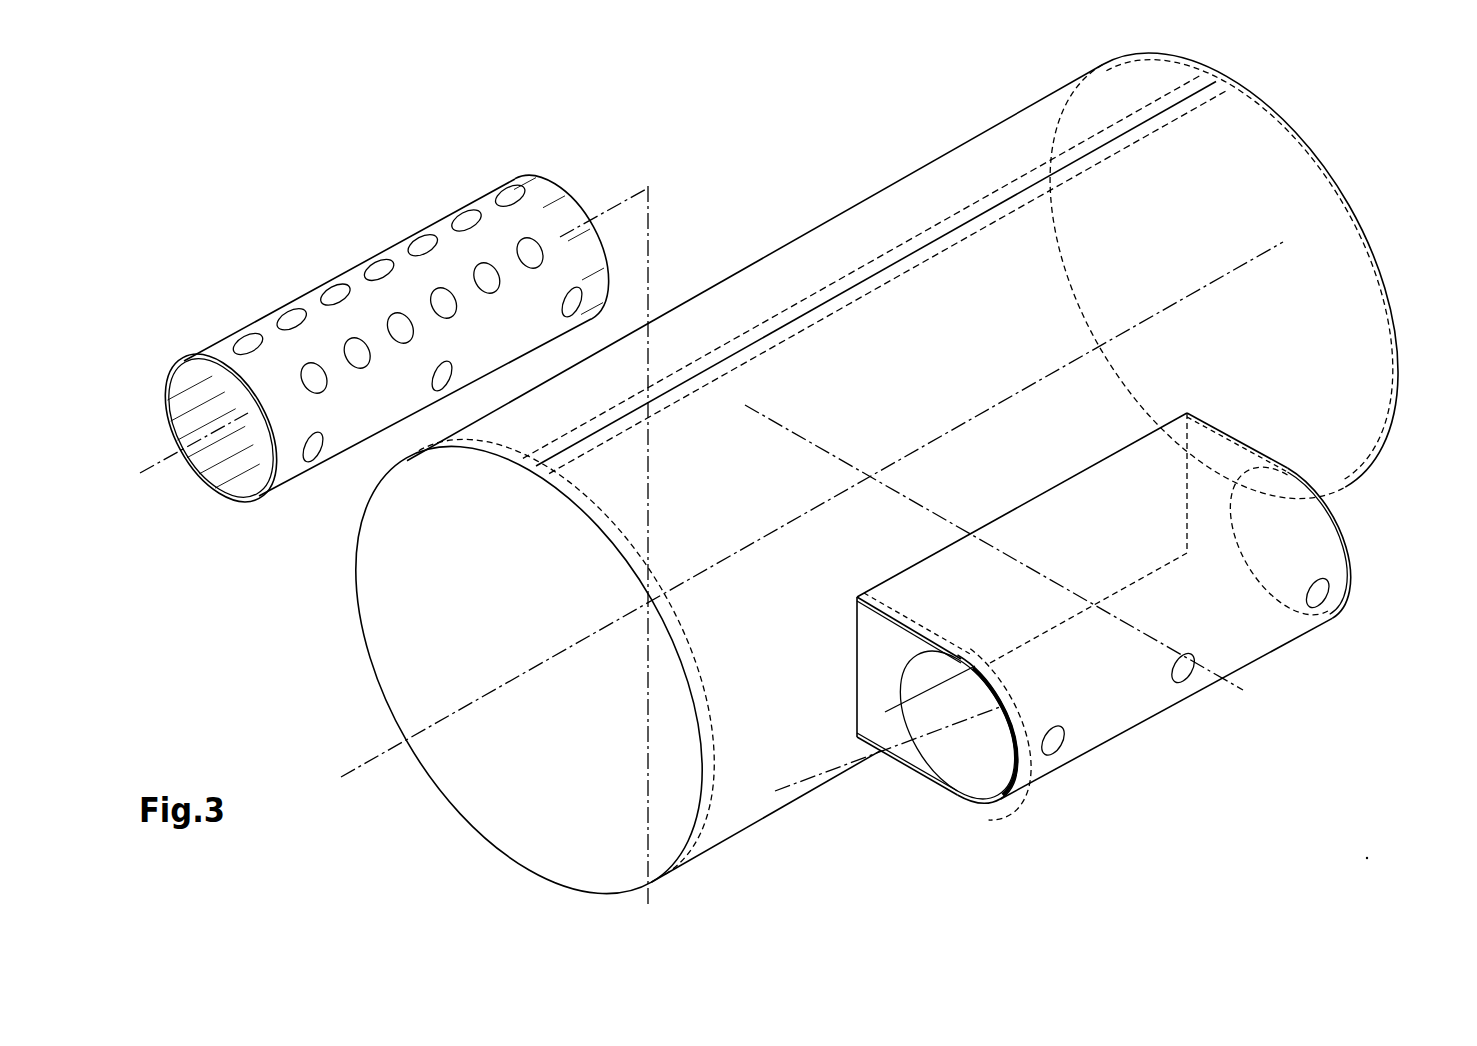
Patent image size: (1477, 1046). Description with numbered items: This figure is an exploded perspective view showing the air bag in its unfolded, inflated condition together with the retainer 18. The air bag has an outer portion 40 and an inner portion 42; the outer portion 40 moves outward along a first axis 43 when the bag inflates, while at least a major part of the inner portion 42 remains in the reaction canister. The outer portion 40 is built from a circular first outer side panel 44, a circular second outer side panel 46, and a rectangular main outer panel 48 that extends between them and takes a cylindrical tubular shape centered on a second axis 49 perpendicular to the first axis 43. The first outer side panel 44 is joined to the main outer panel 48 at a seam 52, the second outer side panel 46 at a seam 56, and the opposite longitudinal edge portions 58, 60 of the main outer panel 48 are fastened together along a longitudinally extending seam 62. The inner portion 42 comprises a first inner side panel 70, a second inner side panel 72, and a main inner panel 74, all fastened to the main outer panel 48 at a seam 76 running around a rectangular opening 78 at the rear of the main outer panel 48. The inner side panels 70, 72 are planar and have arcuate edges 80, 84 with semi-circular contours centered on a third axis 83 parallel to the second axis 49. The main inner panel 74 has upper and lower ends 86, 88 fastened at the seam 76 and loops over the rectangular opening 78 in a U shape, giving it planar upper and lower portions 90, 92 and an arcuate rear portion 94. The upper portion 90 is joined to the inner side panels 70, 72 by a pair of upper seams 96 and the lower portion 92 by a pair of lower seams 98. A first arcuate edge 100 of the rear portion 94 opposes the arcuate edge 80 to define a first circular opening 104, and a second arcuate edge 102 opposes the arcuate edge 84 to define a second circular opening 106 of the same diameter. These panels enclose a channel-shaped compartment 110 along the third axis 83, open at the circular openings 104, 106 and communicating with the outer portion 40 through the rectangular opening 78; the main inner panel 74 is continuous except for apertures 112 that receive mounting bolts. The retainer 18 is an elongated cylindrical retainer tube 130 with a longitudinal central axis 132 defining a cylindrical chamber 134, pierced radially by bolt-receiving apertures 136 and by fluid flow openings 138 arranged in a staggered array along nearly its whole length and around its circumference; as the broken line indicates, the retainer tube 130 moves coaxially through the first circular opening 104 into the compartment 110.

The retainer 18 is at (391, 356).
The outer portion 40 is at (840, 498).
The inner portion 42 is at (1103, 468).
The first axis 43 is at (1243, 690).
The first outer side panel 44 is at (528, 662).
The second outer side panel 46 is at (1275, 175).
The main outer panel 48 is at (878, 190).
The second axis 49 is at (383, 752).
The seam 52 is at (515, 450).
The seam 56 is at (1185, 55).
The longitudinal edge portion 58 is at (735, 332).
The longitudinal edge portion 60 is at (760, 360).
The longitudinally extending seam 62 is at (788, 332).
The first inner side panel 70 is at (1116, 610).
The second inner side panel 72 is at (1258, 450).
The main inner panel 74 is at (1058, 523).
The seam 76 is at (1039, 581).
The rectangular opening 78 is at (898, 748).
The arcuate edge 80 is at (958, 731).
The third axis 83 is at (790, 876).
The arcuate edge 84 is at (1343, 522).
The upper end 86 is at (1078, 472).
The lower end 88 is at (1142, 575).
The upper portion 90 is at (943, 575).
The lower portion 92 is at (927, 702).
The rear portion 94 is at (1298, 521).
The upper seams 96 is at (860, 612).
The lower seams 98 is at (848, 734).
The first arcuate edge 100 is at (1012, 720).
The second arcuate edge 102 is at (1350, 575).
The first circular opening 104 is at (972, 790).
The second circular opening 106 is at (1362, 532).
The compartment 110 is at (989, 762).
The apertures 112 is at (1077, 725).
The retainer tube 130 is at (280, 305).
The longitudinal central axis 132 is at (165, 465).
The cylindrical chamber 134 is at (230, 474).
The apertures 136 is at (570, 320).
The fluid flow openings 138 is at (425, 222).